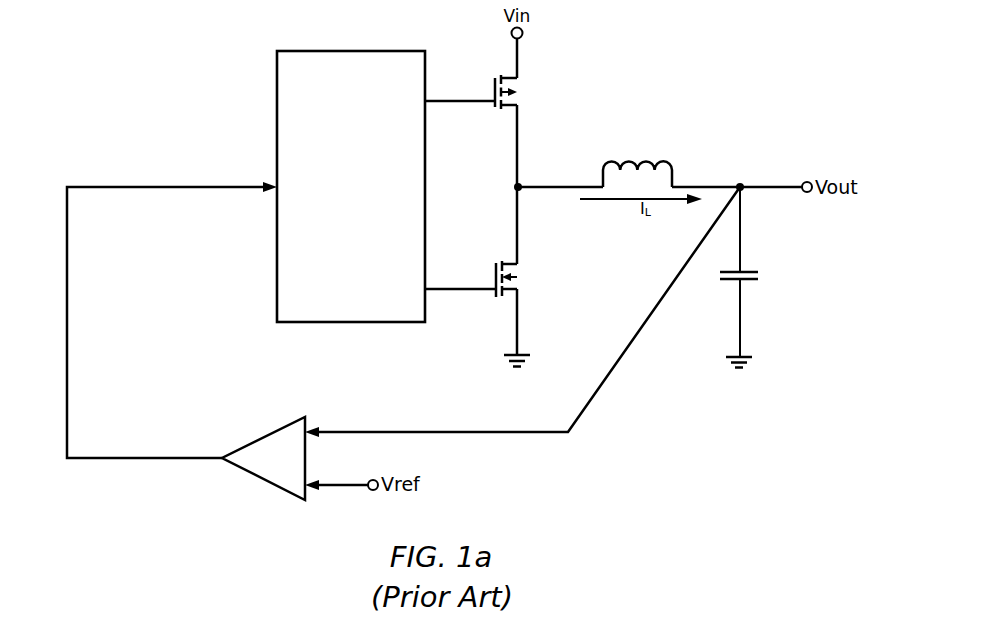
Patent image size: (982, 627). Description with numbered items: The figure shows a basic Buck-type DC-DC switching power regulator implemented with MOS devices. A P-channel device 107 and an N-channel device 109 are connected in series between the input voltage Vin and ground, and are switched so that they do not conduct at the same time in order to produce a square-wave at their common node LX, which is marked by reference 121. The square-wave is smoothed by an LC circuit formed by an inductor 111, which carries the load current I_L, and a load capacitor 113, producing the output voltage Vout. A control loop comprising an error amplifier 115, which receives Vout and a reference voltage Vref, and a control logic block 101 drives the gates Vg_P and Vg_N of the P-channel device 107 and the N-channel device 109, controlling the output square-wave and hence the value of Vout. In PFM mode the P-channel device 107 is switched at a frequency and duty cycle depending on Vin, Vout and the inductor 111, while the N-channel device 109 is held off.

The control logic block 101 is at (417, 316).
The P-channel device 107 is at (520, 93).
The N-channel device 109 is at (514, 277).
The inductor 111 is at (639, 161).
The load capacitor 113 is at (746, 270).
The error amplifier 115 is at (277, 425).
The switching node LX 121 is at (592, 127).